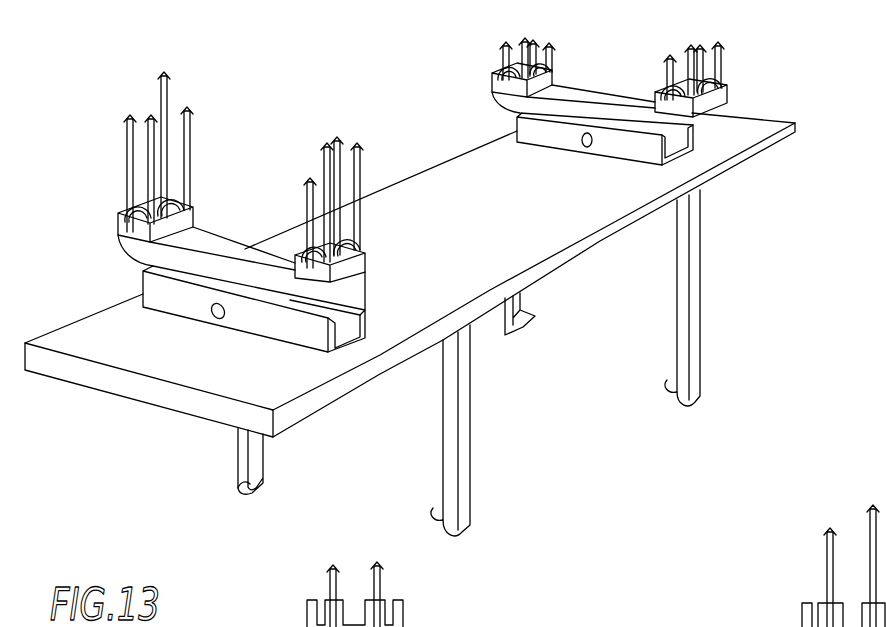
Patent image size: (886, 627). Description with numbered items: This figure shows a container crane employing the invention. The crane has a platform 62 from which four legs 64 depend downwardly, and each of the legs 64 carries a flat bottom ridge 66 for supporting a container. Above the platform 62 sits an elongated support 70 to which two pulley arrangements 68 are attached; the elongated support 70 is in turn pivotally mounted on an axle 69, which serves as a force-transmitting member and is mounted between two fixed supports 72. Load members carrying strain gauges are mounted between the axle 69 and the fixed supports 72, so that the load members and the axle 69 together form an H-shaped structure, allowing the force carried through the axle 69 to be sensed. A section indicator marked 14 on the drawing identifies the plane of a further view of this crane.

The section line for FIG. 14 is at (88, 202).
The platform 62 is at (561, 268).
The legs 64 is at (466, 440).
The flat bottom ridges 66 is at (442, 512).
The holder cup with pins 68 is at (190, 202).
The axle 69 is at (213, 322).
The elongated support 70 is at (247, 260).
The fixed supports 72 is at (364, 310).